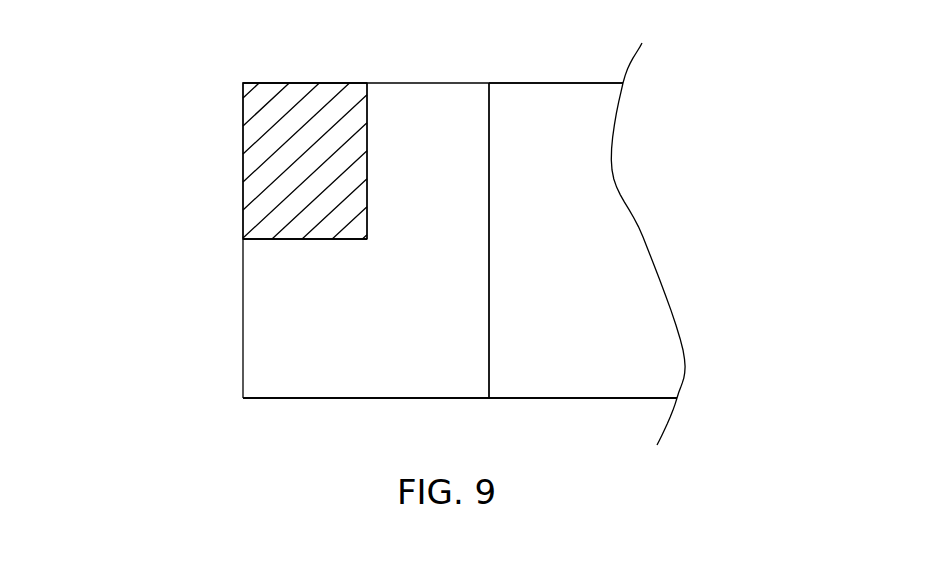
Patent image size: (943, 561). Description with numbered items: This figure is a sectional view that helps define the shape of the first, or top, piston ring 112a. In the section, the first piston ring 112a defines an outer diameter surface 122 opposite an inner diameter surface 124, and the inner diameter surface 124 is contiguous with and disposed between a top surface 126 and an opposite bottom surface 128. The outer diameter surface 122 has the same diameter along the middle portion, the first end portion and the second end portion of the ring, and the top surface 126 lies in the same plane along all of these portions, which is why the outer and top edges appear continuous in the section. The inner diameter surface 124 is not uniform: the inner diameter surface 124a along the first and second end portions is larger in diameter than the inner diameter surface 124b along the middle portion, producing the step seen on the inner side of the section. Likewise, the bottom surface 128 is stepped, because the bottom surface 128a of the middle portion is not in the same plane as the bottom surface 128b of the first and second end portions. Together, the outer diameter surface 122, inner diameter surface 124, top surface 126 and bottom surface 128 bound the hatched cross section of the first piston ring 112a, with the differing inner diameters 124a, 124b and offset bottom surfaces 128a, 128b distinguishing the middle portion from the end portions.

The first piston ring 112a is at (130, 60).
The outer diameter surface 122 is at (243, 162).
The inner diameter surface 124 is at (489, 119).
The inner diameter surface 124a is at (367, 198).
The inner diameter surface 124b is at (489, 119).
The top surface 126 is at (325, 83).
The bottom surface 128 is at (393, 398).
The bottom surface 128a is at (393, 398).
The bottom surface 128b is at (290, 239).